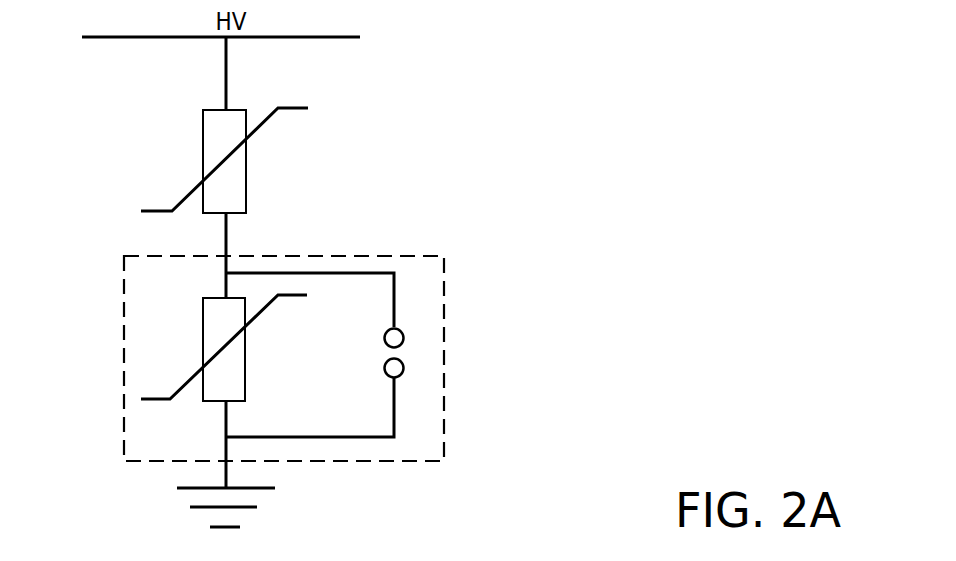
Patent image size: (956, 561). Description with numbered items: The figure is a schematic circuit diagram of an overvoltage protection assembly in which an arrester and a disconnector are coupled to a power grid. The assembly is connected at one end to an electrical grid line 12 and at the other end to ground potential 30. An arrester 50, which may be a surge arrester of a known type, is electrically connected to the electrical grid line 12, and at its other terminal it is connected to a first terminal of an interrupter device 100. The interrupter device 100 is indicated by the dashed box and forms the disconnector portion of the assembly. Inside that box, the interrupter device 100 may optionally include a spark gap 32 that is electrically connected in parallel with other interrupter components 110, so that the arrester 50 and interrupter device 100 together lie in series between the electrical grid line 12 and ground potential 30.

The arrester 50 is at (246, 153).
The interrupter device 100 is at (444, 287).
The other interrupter components 110 is at (203, 329).
The spark gap 32 is at (400, 355).
The electrical grid line 12 is at (226, 472).
The ground potential 30 is at (226, 488).